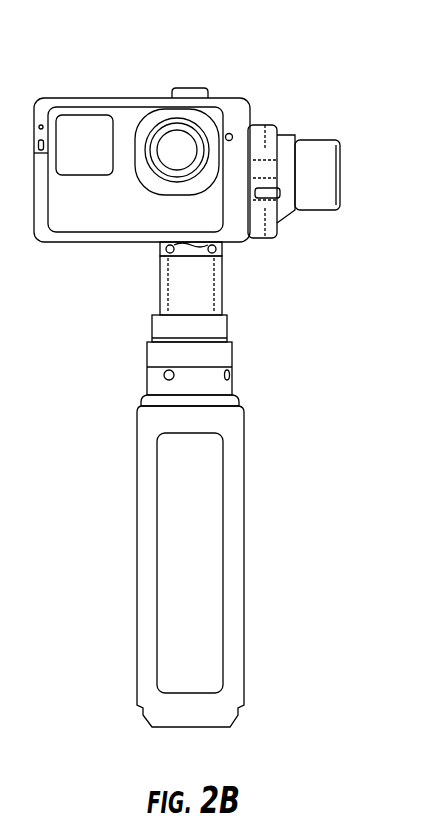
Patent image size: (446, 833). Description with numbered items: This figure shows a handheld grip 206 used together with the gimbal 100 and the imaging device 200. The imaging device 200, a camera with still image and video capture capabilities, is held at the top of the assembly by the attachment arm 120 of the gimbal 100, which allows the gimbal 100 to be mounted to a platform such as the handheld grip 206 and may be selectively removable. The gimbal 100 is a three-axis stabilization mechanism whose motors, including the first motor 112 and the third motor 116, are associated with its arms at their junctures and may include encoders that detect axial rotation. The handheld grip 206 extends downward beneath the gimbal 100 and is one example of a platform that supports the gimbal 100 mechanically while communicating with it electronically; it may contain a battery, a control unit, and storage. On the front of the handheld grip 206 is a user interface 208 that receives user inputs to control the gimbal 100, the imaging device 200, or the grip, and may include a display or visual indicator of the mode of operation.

The gimbal 100 is at (368, 86).
The first motor 112 is at (229, 325).
The third motor 116 is at (343, 170).
The attachment arm 120 is at (236, 116).
The imaging device 200 is at (148, 219).
The handheld grip 206 is at (253, 485).
The user interface 208 is at (224, 500).